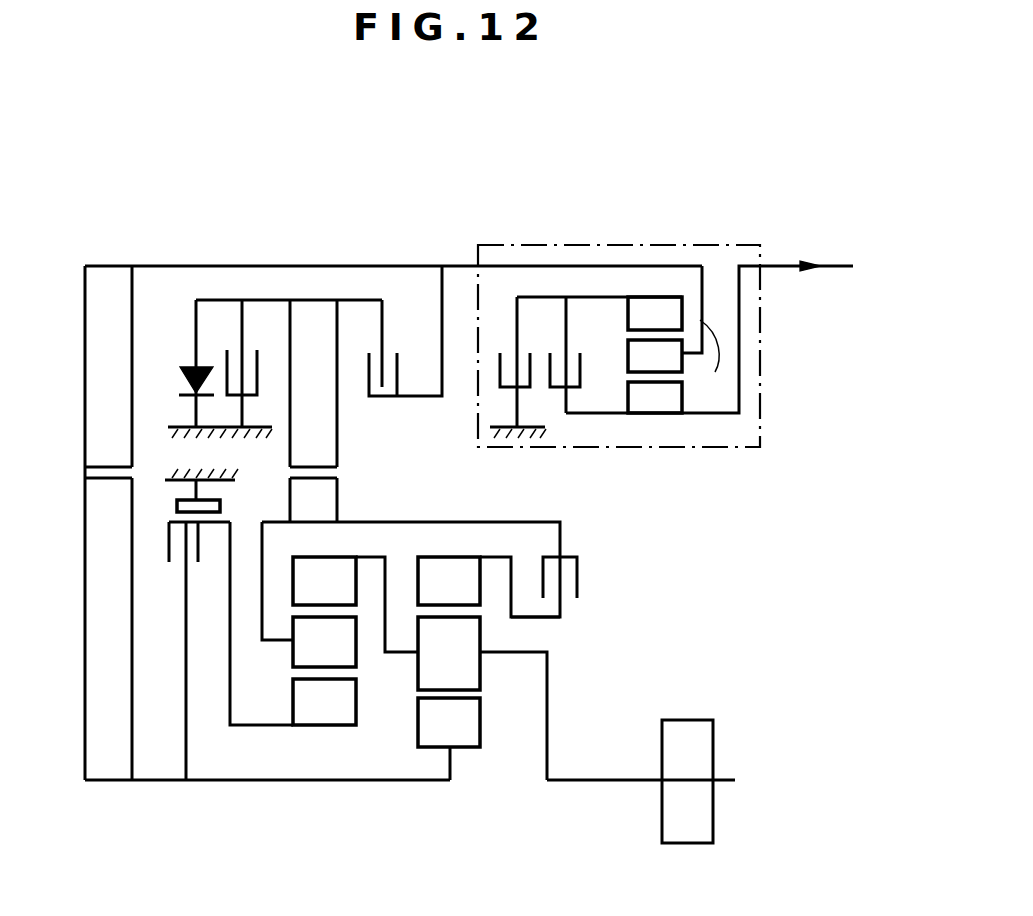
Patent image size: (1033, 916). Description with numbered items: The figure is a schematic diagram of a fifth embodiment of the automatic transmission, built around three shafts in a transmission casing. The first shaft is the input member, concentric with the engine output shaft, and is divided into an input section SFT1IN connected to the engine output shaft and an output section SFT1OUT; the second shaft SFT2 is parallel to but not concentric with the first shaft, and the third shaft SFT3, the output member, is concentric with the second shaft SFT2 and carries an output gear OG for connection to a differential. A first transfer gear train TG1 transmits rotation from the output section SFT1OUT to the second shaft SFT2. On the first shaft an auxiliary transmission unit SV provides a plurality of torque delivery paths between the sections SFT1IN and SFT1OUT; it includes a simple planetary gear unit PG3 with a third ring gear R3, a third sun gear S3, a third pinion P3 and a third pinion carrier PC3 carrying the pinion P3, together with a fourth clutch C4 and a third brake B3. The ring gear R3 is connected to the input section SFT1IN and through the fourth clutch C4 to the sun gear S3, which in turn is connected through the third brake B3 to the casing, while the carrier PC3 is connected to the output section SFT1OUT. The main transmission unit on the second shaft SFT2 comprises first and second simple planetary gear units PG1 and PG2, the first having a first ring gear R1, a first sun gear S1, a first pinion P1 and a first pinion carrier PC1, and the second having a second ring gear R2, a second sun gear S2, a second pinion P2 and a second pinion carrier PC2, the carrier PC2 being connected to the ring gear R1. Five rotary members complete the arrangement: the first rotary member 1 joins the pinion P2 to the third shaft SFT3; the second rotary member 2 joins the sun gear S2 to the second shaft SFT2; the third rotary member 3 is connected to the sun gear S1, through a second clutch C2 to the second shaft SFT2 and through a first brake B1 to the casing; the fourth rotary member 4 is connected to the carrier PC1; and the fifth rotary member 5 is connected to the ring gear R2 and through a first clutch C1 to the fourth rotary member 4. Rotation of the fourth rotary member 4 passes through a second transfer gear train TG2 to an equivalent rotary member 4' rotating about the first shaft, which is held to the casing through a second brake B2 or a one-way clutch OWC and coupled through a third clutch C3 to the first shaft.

The first rotary member 1 is at (553, 690).
The second rotary member 2 is at (457, 763).
The third rotary member 3 is at (263, 731).
The fourth rotary member 4 is at (411, 557).
The equivalent rotary member 4' is at (289, 249).
The fifth rotary member 5 is at (565, 618).
The second shaft section SFT1OUT is at (410, 262).
The first shaft section SFT1IN is at (780, 262).
The second shaft SFT2 is at (246, 784).
The third shaft SFT3 is at (609, 785).
The first transfer gear train TG1 is at (82, 523).
The second transfer gear train TG2 is at (342, 411).
The one-way clutch OWC is at (201, 369).
The first brake B1 is at (210, 495).
The second brake B2 is at (255, 363).
The third brake B3 is at (514, 367).
The first clutch C1 is at (577, 577).
The second clutch C2 is at (187, 651).
The third clutch C3 is at (405, 331).
The fourth clutch C4 is at (574, 355).
The first planetary gear unit PG1 is at (367, 786).
The second planetary gear unit PG2 is at (489, 789).
The third planetary gear unit PG3 is at (681, 215).
The first pinion carrier PC1 is at (273, 641).
The second pinion carrier PC2 is at (400, 654).
The third pinion carrier PC3 is at (709, 362).
The first ring gear R1 is at (324, 581).
The second ring gear R2 is at (449, 581).
The third ring gear R3 is at (655, 397).
The first pinion P1 is at (324, 642).
The second pinion P2 is at (449, 653).
The third pinion P3 is at (655, 356).
The first sun gear S1 is at (324, 702).
The second sun gear S2 is at (449, 722).
The third sun gear S3 is at (655, 313).
The auxiliary transmission unit SV is at (758, 366).
The output gear OG is at (698, 716).